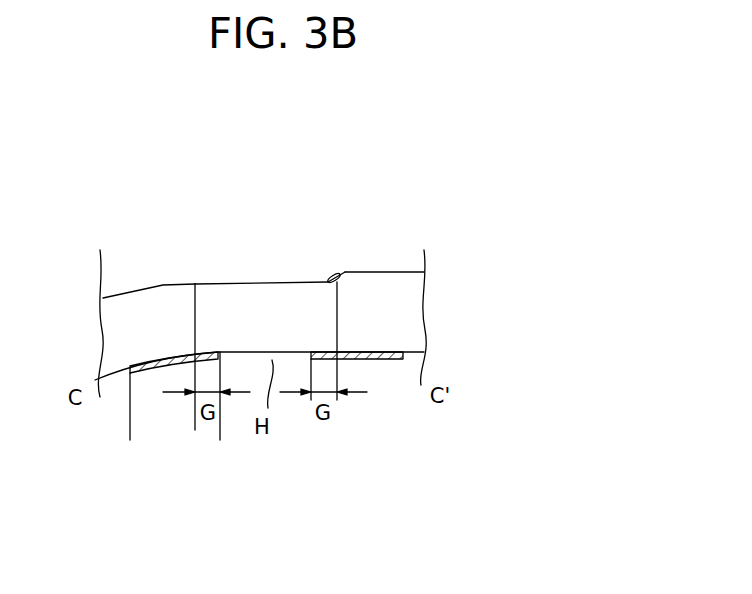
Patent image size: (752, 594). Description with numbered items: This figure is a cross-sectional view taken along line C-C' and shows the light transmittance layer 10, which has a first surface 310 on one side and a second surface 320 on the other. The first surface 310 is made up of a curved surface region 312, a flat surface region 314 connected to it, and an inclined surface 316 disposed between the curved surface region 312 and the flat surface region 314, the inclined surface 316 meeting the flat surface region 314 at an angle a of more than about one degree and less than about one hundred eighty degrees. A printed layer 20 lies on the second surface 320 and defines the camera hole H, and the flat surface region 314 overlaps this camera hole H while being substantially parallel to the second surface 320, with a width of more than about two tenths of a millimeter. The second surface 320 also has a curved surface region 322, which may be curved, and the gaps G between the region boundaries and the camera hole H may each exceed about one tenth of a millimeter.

The light transmittance layer 10 is at (410, 306).
The printed layer 20 is at (280, 409).
The first surface 310 is at (263, 300).
The curved surface region 312 is at (163, 285).
The flat surface region 314 is at (263, 282).
The inclined surface 316 is at (335, 302).
The second surface 320 is at (407, 362).
The curved surface region of the second surface 322 is at (132, 435).